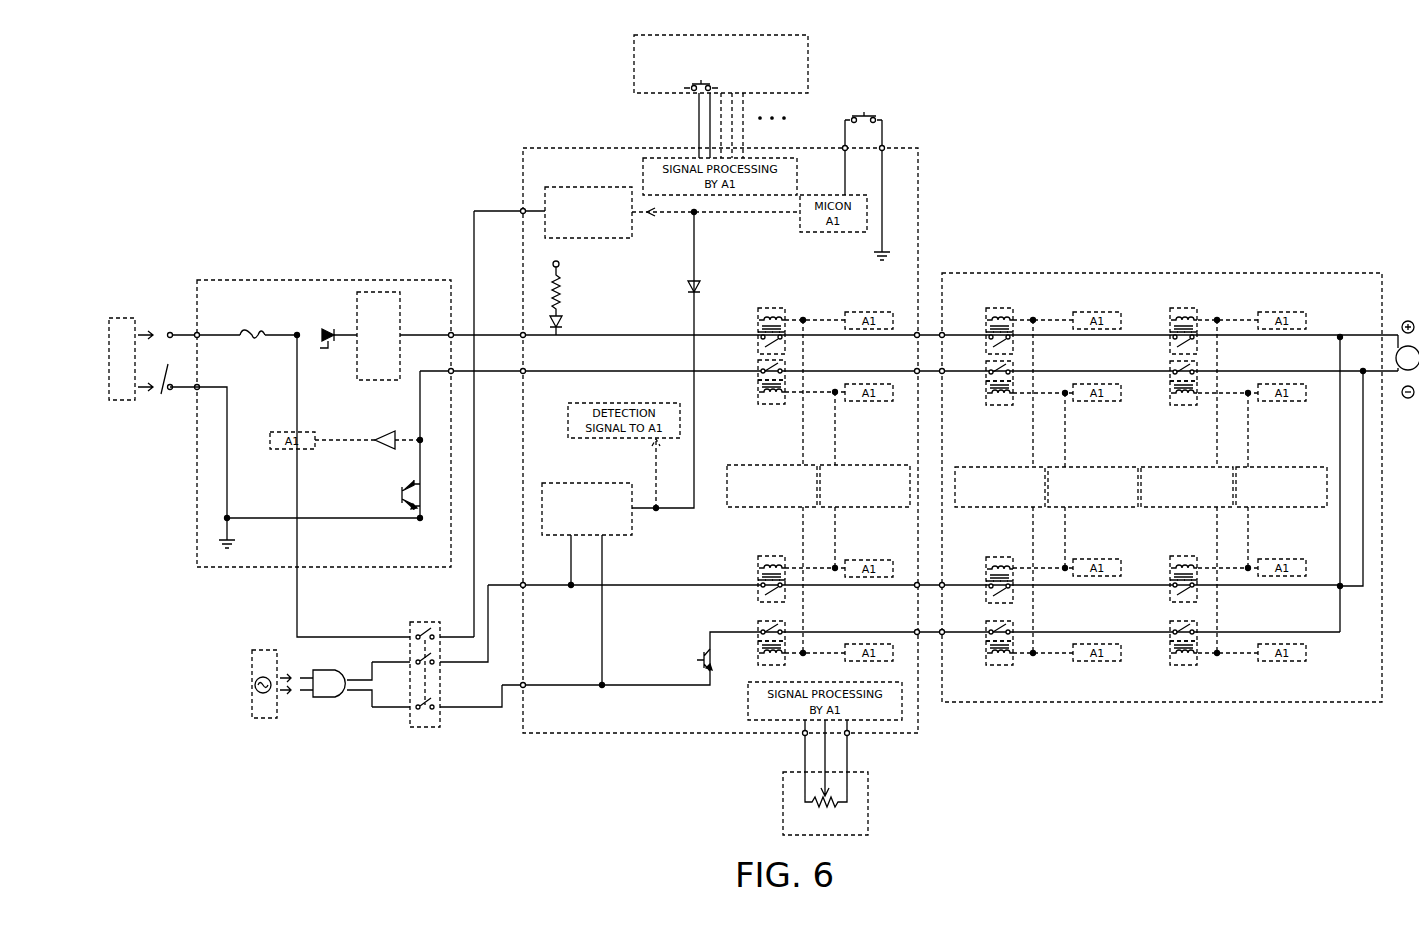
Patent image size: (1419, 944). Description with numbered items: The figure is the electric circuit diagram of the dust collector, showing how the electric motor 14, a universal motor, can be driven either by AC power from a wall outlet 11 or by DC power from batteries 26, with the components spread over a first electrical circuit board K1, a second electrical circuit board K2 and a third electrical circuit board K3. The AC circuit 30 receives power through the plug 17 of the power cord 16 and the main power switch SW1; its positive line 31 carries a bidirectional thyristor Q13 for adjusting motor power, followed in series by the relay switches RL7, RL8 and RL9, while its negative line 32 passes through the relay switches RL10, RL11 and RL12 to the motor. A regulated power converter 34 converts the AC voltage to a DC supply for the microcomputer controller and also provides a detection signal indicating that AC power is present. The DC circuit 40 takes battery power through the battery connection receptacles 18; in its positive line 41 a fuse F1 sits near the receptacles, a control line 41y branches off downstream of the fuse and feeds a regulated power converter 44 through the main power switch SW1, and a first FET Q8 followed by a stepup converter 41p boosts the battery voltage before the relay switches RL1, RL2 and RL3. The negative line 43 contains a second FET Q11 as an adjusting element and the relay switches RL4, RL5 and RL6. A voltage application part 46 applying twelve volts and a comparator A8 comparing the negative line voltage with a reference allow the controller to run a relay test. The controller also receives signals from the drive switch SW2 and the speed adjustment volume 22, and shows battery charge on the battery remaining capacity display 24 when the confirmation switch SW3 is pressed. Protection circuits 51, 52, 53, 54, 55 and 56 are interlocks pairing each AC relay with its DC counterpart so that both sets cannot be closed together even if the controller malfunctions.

The wall outlet 11 is at (264, 718).
The electric motor 14 is at (1408, 400).
The power cord 16 is at (356, 696).
The plug 17 is at (322, 694).
The battery connection receptacles 18 is at (163, 398).
The speed adjustment volume 22 is at (862, 787).
The battery remaining capacity display 24 is at (751, 65).
The batteries 26 is at (121, 316).
The AC circuit 30 is at (486, 722).
The positive line 31 is at (662, 685).
The negative line 32 is at (663, 585).
The regulated power converter 34 is at (555, 483).
The DC circuit 40 is at (339, 308).
The positive line 41 is at (501, 334).
The stepup converter 41p is at (385, 292).
The control line 41y is at (356, 638).
The negative line 43 is at (501, 372).
The regulated power converter 44 is at (587, 187).
The voltage application part 46 is at (560, 292).
The first protection circuit 51 is at (753, 464).
The second protection circuit 52 is at (984, 466).
The third protection circuit 53 is at (1180, 466).
The fourth protection circuit 54 is at (1280, 466).
The fifth protection circuit 55 is at (1102, 466).
The sixth protection circuit 56 is at (868, 464).
The first electrical circuit board K1 is at (228, 280).
The second electrical circuit board K2 is at (898, 190).
The third electrical circuit board K3 is at (1322, 292).
The fuse F1 is at (252, 324).
The first FET Q8 is at (330, 328).
The second FET Q11 is at (398, 495).
The bidirectional thyristor Q13 is at (720, 682).
The comparator A8 is at (384, 432).
The main power switch SW1 is at (425, 684).
The drive switch SW2 is at (858, 181).
The confirmation switch SW3 is at (718, 87).
The first relay switch RL1 is at (810, 331).
The second relay switch RL2 is at (1039, 331).
The third relay switch RL3 is at (1223, 331).
The fourth relay switch RL4 is at (1223, 383).
The fifth relay switch RL5 is at (1039, 383).
The sixth relay switch RL6 is at (810, 382).
The first relay switch RL7 is at (810, 643).
The second relay switch RL8 is at (1039, 643).
The third relay switch RL9 is at (1223, 643).
The fourth relay switch RL10 is at (1218, 579).
The fifth relay switch RL11 is at (1033, 580).
The sixth relay switch RL12 is at (805, 579).